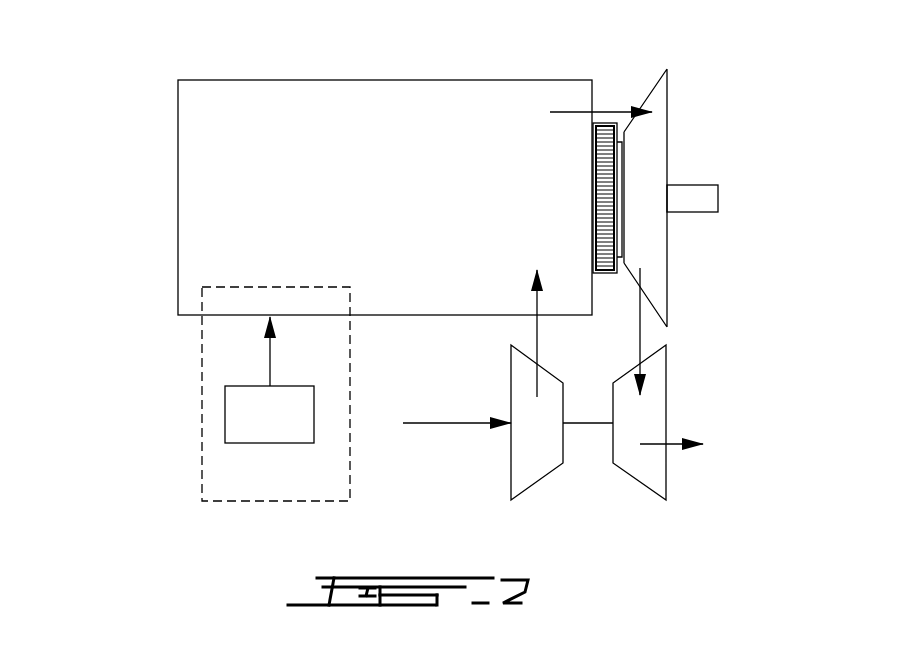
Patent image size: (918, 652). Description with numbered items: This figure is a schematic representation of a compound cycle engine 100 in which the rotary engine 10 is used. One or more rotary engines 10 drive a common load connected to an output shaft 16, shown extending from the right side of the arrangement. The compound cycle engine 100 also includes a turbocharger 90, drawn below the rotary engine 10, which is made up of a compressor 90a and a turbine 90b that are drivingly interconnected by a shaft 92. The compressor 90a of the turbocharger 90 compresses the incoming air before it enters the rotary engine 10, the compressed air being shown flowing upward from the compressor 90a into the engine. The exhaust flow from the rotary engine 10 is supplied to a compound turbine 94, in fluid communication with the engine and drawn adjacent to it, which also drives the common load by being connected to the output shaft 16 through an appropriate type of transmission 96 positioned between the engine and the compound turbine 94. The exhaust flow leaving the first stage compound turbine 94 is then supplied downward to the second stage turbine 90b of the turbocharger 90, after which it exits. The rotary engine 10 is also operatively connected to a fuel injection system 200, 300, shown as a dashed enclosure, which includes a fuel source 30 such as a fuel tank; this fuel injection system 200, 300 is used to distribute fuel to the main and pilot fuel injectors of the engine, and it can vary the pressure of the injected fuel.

The compound cycle engine 100 is at (118, 125).
The rotary engine 10 is at (300, 113).
The transmission 96 is at (605, 173).
The compound turbine 94 is at (655, 178).
The output shaft 16 is at (698, 198).
The fuel injection system 200 is at (194, 394).
The fuel injection system 300 is at (202, 342).
The fuel source 30 is at (267, 429).
The turbocharger 90 is at (579, 458).
The compressor 90a is at (511, 455).
The shaft 92 is at (585, 423).
The turbine 90b is at (647, 425).